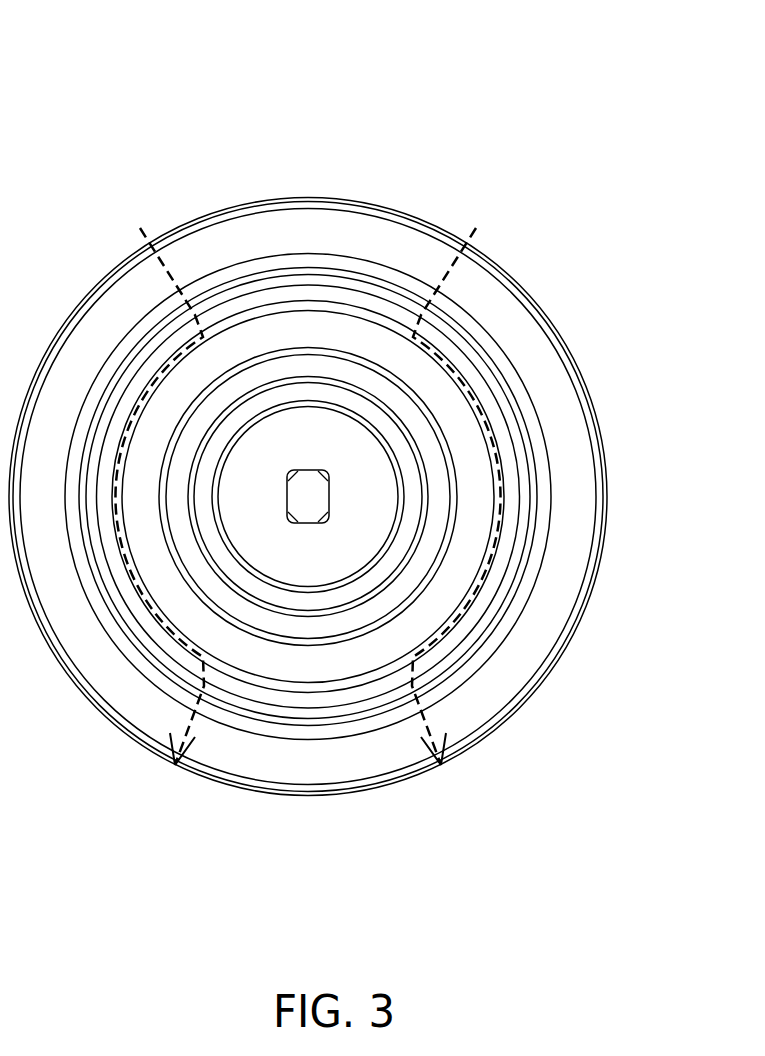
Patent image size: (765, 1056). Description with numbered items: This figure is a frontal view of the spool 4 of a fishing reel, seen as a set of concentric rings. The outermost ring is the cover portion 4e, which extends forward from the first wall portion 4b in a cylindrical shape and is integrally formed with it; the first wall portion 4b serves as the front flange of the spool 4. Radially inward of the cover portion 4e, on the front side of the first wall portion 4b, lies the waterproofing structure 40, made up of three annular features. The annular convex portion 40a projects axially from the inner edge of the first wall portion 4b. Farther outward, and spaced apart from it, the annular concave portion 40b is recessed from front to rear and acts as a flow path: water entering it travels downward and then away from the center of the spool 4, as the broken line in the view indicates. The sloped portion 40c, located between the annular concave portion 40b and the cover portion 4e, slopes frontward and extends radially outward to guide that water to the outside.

The spool 4 is at (529, 280).
The first wall portion 4b is at (433, 267).
The cover portion 4e is at (200, 283).
The waterproofing structure 40 is at (388, 60).
The annular convex portion 40a is at (248, 367).
The annular concave portion 40b is at (315, 303).
The sloped portion 40c is at (377, 290).